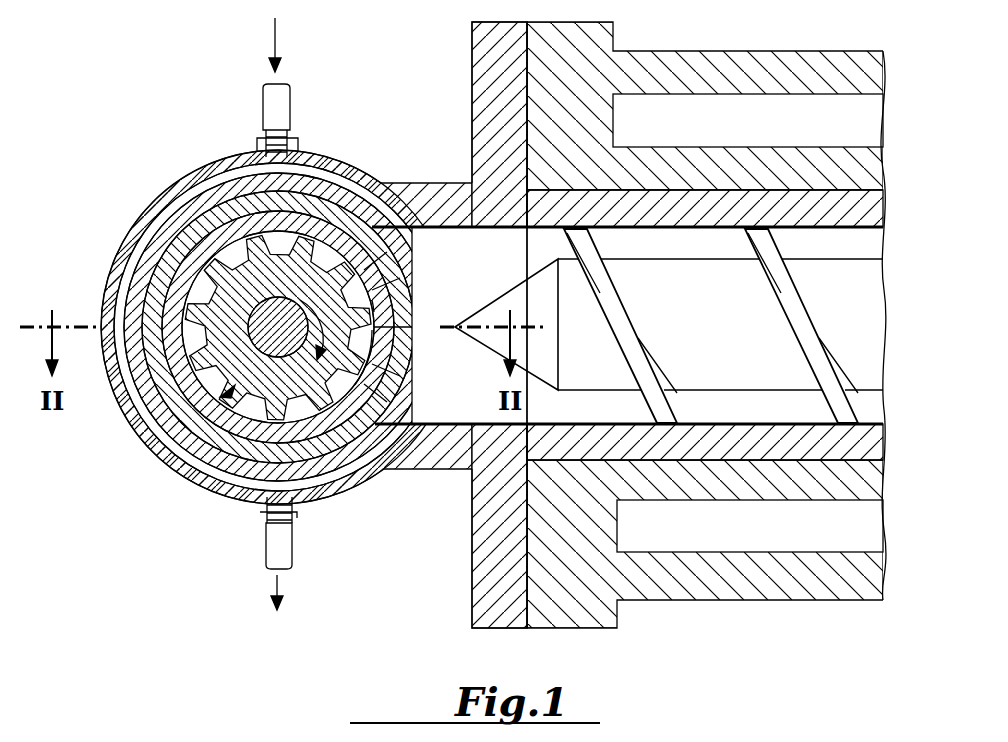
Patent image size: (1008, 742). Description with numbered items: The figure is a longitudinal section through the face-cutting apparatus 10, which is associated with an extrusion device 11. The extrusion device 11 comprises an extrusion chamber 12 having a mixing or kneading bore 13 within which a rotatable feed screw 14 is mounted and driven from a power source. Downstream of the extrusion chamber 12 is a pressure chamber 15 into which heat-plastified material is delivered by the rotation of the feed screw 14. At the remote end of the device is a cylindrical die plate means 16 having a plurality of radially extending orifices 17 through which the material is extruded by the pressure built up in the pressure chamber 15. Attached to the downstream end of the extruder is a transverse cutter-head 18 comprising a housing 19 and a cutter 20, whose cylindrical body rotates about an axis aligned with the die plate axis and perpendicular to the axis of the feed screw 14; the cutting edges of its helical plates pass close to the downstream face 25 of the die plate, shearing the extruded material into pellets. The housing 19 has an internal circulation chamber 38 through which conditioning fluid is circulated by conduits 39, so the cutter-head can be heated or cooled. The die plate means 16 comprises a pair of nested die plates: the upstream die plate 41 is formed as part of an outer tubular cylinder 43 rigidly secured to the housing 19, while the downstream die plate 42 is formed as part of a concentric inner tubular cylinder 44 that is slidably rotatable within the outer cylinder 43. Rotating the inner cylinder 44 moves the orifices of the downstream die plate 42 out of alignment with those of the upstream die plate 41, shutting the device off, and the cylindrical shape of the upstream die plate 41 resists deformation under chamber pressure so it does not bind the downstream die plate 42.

The face-cutting apparatus 10 is at (448, 533).
The extrusion device 11 is at (706, 40).
The extrusion chamber 12 is at (862, 160).
The mixing or kneading bore 13 is at (862, 243).
The feed screw 14 is at (866, 312).
The pressure chamber 15 is at (466, 253).
The die plate means 16 is at (397, 240).
The radially extending orifices 17 is at (415, 350).
The transverse cutter-head 18 is at (472, 55).
The housing 19 is at (373, 467).
The cutter 20 is at (180, 440).
The downstream face 25 is at (395, 300).
The internal circulation chamber 38 is at (170, 203).
The conduits 39 is at (270, 108).
The upstream die plate 41 is at (405, 377).
The downstream die plate 42 is at (273, 440).
The outer tubular cylinder 43 is at (165, 262).
The inner tubular cylinder 44 is at (197, 398).